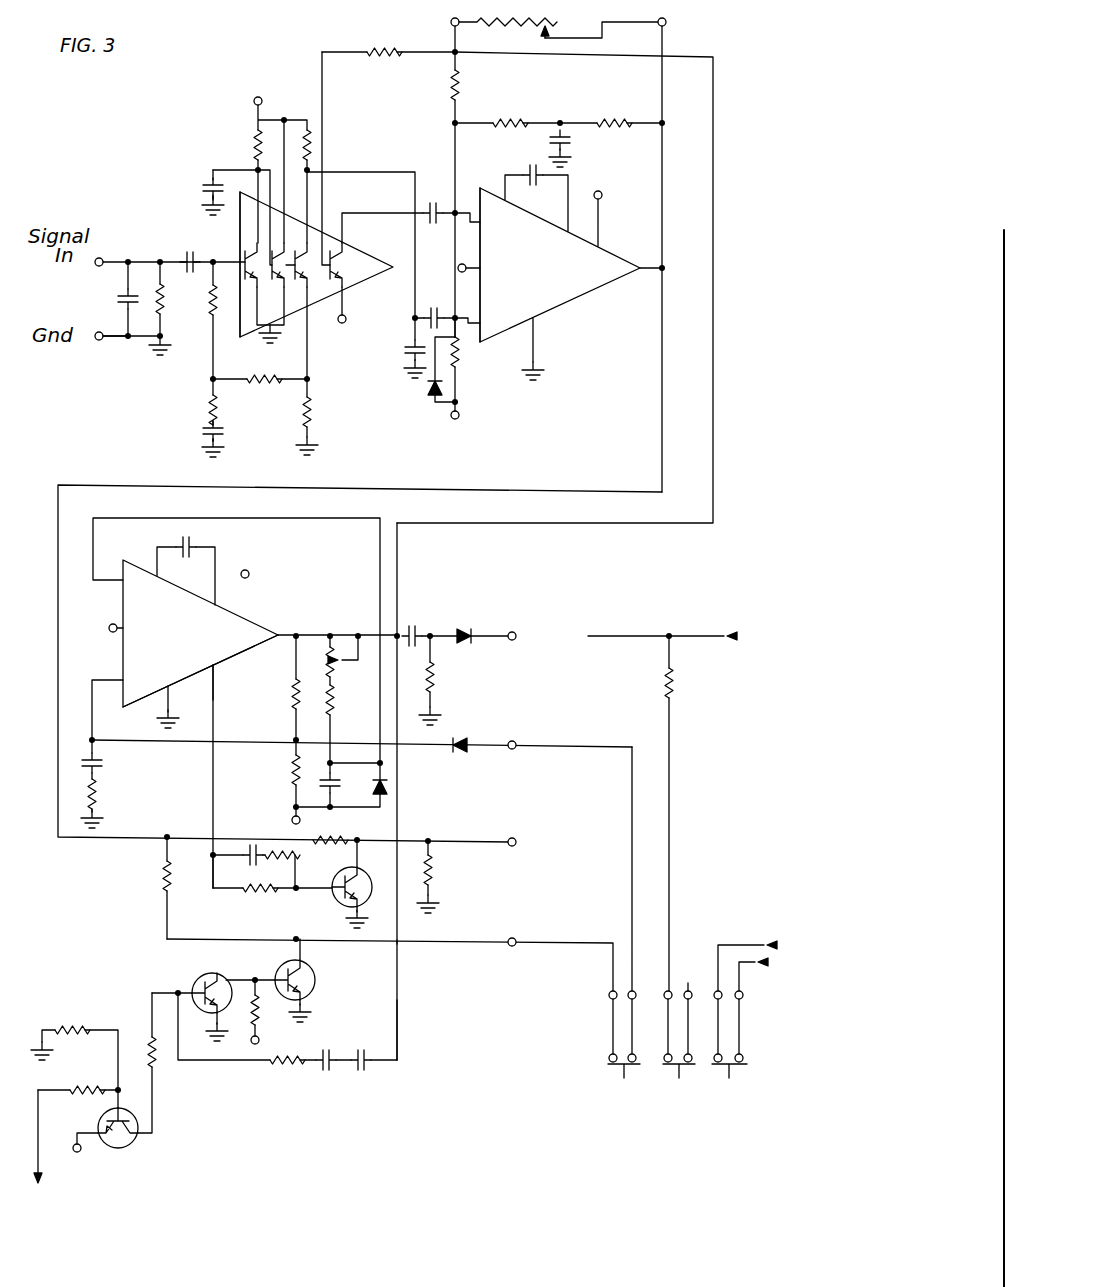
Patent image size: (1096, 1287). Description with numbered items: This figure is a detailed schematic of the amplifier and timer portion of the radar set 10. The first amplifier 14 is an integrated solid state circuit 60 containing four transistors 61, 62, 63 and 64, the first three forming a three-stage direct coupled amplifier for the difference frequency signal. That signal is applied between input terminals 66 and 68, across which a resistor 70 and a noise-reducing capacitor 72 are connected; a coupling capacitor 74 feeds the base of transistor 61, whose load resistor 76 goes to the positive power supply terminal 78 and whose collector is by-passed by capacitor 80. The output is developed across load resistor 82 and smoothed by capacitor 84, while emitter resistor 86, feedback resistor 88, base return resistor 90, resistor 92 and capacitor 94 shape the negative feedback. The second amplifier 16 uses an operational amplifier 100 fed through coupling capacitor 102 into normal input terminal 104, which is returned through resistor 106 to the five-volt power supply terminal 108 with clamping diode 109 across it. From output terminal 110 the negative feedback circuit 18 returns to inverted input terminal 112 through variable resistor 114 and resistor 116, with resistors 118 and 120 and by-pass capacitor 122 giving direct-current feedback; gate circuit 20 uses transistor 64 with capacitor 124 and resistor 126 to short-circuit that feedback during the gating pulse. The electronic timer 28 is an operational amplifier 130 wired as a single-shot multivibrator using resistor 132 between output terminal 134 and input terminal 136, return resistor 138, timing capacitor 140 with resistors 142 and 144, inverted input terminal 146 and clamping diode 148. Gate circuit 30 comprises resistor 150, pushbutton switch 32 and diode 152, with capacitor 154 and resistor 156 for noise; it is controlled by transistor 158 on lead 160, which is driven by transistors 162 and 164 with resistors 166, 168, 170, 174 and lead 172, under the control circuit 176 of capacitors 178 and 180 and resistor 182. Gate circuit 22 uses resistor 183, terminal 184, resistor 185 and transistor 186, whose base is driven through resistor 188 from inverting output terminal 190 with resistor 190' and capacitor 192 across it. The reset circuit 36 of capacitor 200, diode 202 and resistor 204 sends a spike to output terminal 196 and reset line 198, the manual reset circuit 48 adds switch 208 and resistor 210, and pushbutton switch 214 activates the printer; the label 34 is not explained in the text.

The radar set 10 is at (88, 129).
The amplifier 14 is at (226, 148).
The second amplifier 16 is at (591, 348).
The negative feedback circuit 18 is at (686, 36).
The gate circuit 20 is at (358, 33).
The gate circuit 22 is at (240, 909).
The electronic timer 28 is at (285, 566).
The gate circuit 30 is at (227, 955).
The pushbutton switch 32 is at (620, 1050).
The alarm output stage 34 is at (268, 1140).
The reset circuit 36 is at (450, 603).
The manual reset circuit 48 is at (692, 927).
The integrated solid state circuit 60 is at (239, 225).
The transistor 61 is at (250, 320).
The transistor 62 is at (282, 318).
The transistor 63 is at (312, 315).
The transistor 64 is at (345, 266).
The input terminal 66 is at (100, 257).
The input terminal 68 is at (99, 342).
The resistor 70 is at (170, 295).
The capacitor 72 is at (117, 291).
The coupling capacitor 74 is at (188, 251).
The load resistor 76 is at (256, 138).
The positive power supply terminal 78 is at (263, 101).
The capacitor 80 is at (205, 186).
The load resistor 82 is at (312, 146).
The capacitor 84 is at (410, 356).
The resistor 86 is at (312, 418).
The feedback resistor 88 is at (265, 386).
The base return resistor 90 is at (211, 321).
The resistor 92 is at (206, 410).
The capacitor 94 is at (203, 433).
The integrated operational amplifier 100 is at (570, 301).
The coupling capacitor 102 is at (446, 300).
The normal input terminal 104 is at (468, 328).
The return resistor 106 is at (461, 361).
The power supply terminal 108 is at (347, 317).
The clamping diode 109 is at (430, 391).
The normal output terminal 110 is at (658, 263).
The inverted input terminal 112 is at (462, 221).
The variable resistor 114 is at (505, 30).
The resistor 116 is at (461, 90).
The resistor 118 is at (612, 117).
The resistor 120 is at (508, 117).
The by-pass capacitor 122 is at (573, 148).
The capacitor 124 is at (431, 200).
The resistor 126 is at (388, 60).
The integrated operational amplifier 130 is at (230, 651).
The resistor 132 is at (290, 701).
The normal output terminal 134 is at (285, 630).
The normal input terminal 136 is at (108, 679).
The return resistor 138 is at (291, 770).
The capacitor 140 is at (345, 787).
The resistor 142 is at (340, 697).
The variable resistor 144 is at (335, 665).
The inverted input terminal 146 is at (103, 579).
The clamping diode 148 is at (390, 787).
The resistor 150 is at (163, 876).
The diode 152 is at (461, 739).
The capacitor 154 is at (106, 766).
The resistor 156 is at (101, 790).
The transistor 158 is at (316, 980).
The lead 160 is at (430, 946).
The transistor 162 is at (192, 978).
The transistor 164 is at (139, 1141).
The load resistor 166 is at (262, 1013).
The resistor 168 is at (148, 1039).
The resistor 170 is at (98, 1085).
The lead 172 is at (40, 1131).
The resistor 174 is at (85, 1022).
The control circuit 176 is at (376, 1090).
The capacitor 178 is at (361, 1072).
The capacitor 180 is at (326, 1072).
The resistor 182 is at (280, 1068).
The resistor 183 is at (336, 835).
The terminal 184 is at (513, 851).
The resistor 185 is at (435, 869).
The transistor 186 is at (366, 871).
The resistor 188 is at (265, 896).
The inverting output terminal 190 is at (196, 687).
The resistor 190' is at (306, 869).
The capacitor 192 is at (250, 845).
The output terminal 196 is at (513, 631).
The reset line 198 is at (695, 636).
The capacitor 200 is at (412, 621).
The diode 202 is at (462, 648).
The resistor 204 is at (438, 681).
The switch 208 is at (665, 1051).
The resistor 210 is at (677, 686).
The pushbutton switch 214 is at (746, 1062).